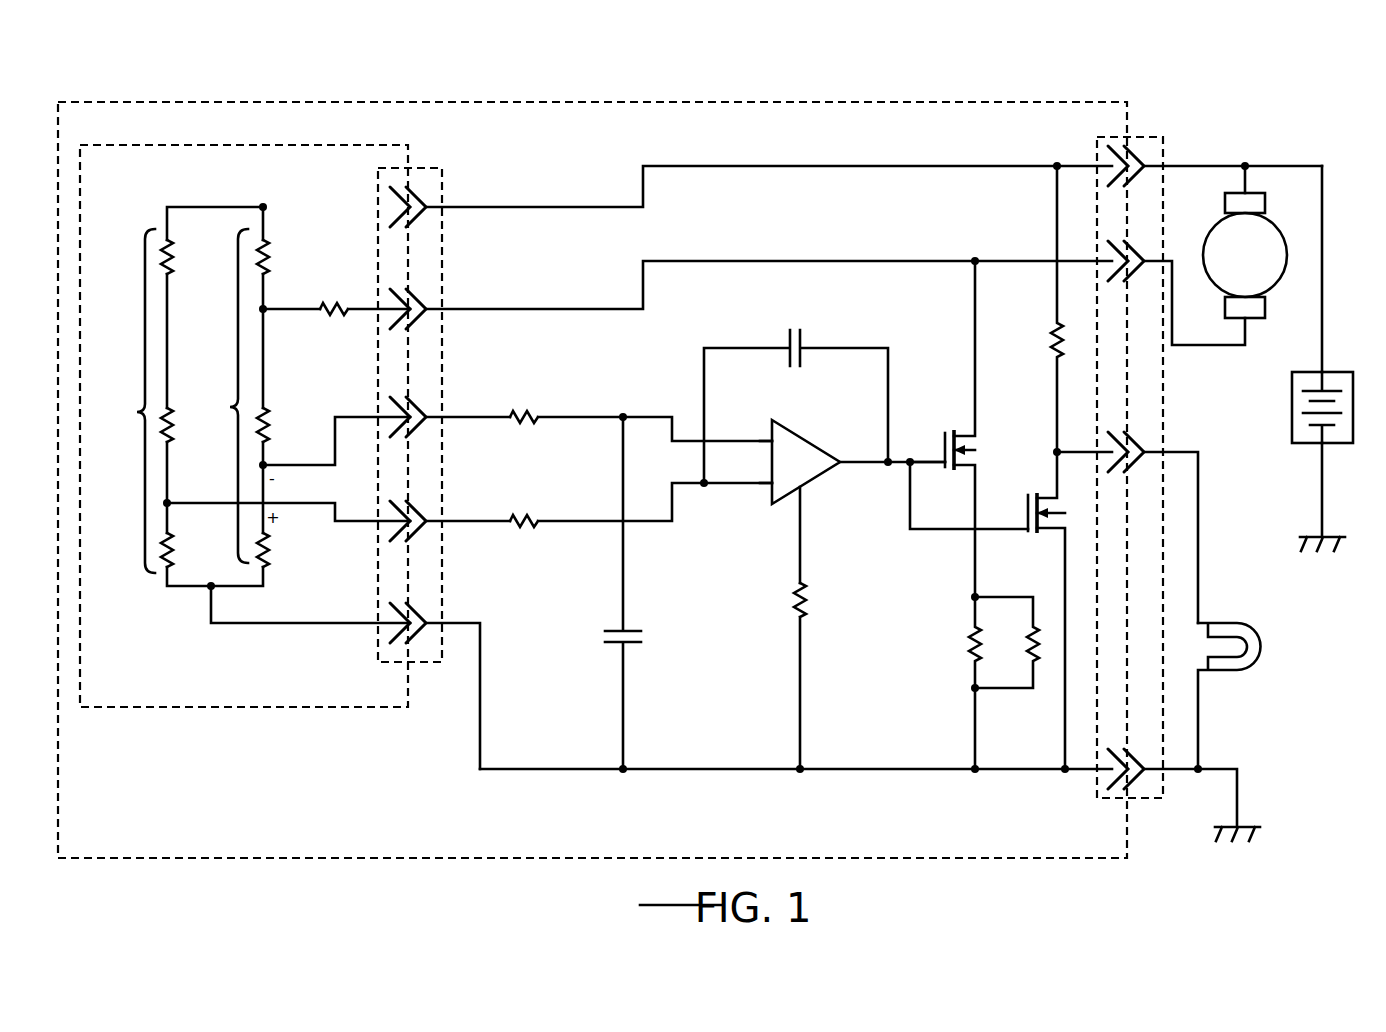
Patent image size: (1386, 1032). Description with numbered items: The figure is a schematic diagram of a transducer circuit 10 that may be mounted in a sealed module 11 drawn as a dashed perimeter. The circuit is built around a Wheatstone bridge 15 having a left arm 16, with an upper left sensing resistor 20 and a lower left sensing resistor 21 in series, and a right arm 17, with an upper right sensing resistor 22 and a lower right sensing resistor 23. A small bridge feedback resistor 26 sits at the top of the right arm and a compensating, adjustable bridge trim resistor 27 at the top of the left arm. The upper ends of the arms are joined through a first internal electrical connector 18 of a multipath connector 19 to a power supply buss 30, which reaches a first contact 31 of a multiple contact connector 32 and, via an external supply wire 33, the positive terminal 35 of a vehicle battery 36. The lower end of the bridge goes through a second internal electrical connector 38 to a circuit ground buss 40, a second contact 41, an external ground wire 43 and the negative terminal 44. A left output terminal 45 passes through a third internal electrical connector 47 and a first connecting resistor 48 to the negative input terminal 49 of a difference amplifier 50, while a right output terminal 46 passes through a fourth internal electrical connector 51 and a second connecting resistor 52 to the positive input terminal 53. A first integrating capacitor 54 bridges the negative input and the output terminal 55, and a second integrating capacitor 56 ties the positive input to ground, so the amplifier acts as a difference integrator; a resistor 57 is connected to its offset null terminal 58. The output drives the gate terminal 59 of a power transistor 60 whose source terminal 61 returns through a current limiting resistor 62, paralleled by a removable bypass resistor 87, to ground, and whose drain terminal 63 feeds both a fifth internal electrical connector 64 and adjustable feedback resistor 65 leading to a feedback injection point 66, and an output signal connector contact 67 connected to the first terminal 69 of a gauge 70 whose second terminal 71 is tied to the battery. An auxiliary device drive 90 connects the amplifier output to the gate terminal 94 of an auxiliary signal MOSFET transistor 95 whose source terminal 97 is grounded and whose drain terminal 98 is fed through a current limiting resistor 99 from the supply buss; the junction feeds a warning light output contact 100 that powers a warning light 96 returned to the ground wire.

The transducer circuit 10 is at (1080, 80).
The sealed module 11 is at (746, 100).
The Wheatstone bridge 15 is at (118, 712).
The left arm 16 is at (129, 401).
The right arm 17 is at (225, 396).
The first internal electrical connector 18 is at (427, 226).
The multipath connector 19 is at (430, 166).
The upper left sensing resistor 20 is at (170, 413).
The lower left sensing resistor 21 is at (172, 550).
The upper right sensing resistor 22 is at (272, 400).
The lower right sensing resistor 23 is at (268, 550).
The bridge feedback resistor 26 is at (266, 246).
The bridge trim resistor 27 is at (170, 275).
The power supply buss 30 is at (860, 165).
The first contact 31 is at (1129, 178).
The multiple contact connector 32 is at (1155, 140).
The external supply wire 33 is at (1256, 162).
The positive terminal 35 is at (1323, 374).
The vehicle battery 36 is at (1292, 382).
The second internal electrical connector 38 is at (444, 605).
The circuit ground buss 40 is at (926, 775).
The second contact 41 is at (1131, 756).
The external ground wire 43 is at (1210, 766).
The negative terminal 44 is at (1322, 446).
The left output terminal 45 is at (170, 503).
The right output terminal 46 is at (268, 463).
The third internal electrical connector 47 is at (444, 502).
The first connecting resistor 48 is at (538, 536).
The negative input terminal 49 is at (762, 488).
The difference amplifier 50 is at (802, 470).
The fourth internal electrical connector 51 is at (444, 386).
The second connecting resistor 52 is at (538, 426).
The positive input terminal 53 is at (770, 439).
The first integrating capacitor 54 is at (802, 331).
The output terminal 55 is at (836, 456).
The second integrating capacitor 56 is at (629, 612).
The resistor 57 is at (806, 585).
The offset null terminal 58 is at (803, 488).
The gate terminal 59 is at (936, 466).
The power transistor 60 is at (940, 441).
The source terminal 61 is at (980, 451).
The current limiting resistor 62 is at (974, 636).
The drain terminal 63 is at (966, 436).
The fifth internal electrical connector 64 is at (431, 298).
The adjustable feedback resistor 65 is at (336, 296).
The feedback injection point 66 is at (266, 310).
The output signal connector contact 67 is at (1131, 276).
The first terminal 69 is at (1266, 307).
The gauge 70 is at (1206, 270).
The second terminal 71 is at (1225, 204).
The bypass resistor 87 is at (1035, 627).
The auxiliary device drive 90 is at (1072, 380).
The gate terminal 94 is at (1031, 530).
The auxiliary signal MOSFET transistor 95 is at (1026, 511).
The warning light 96 is at (1247, 668).
The source terminal 97 is at (1070, 525).
The drain terminal 98 is at (1060, 498).
The current limiting resistor 99 is at (1054, 342).
The warning light output contact 100 is at (1126, 440).